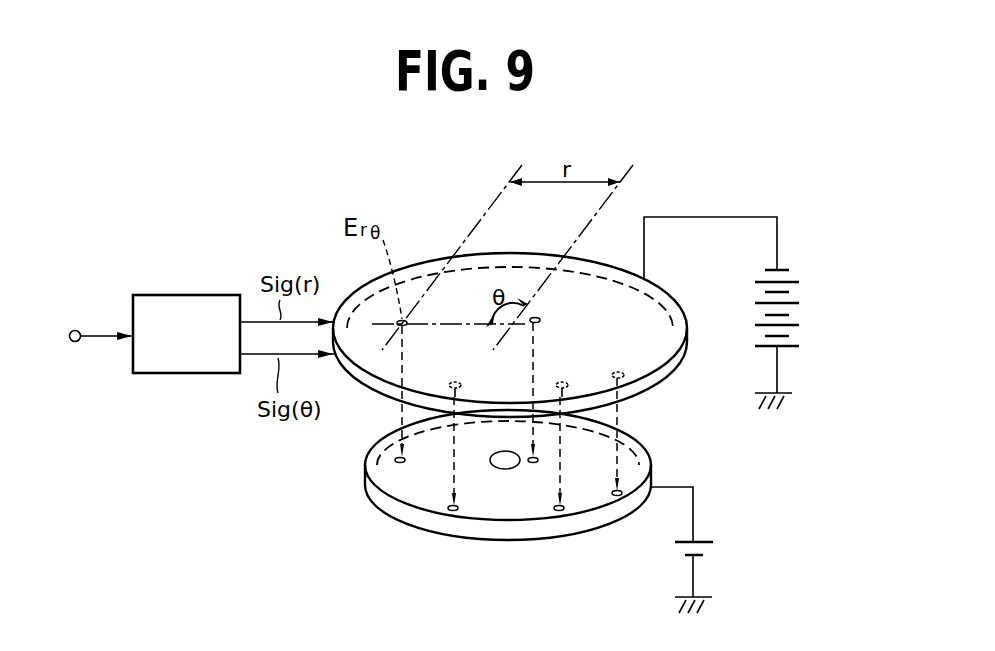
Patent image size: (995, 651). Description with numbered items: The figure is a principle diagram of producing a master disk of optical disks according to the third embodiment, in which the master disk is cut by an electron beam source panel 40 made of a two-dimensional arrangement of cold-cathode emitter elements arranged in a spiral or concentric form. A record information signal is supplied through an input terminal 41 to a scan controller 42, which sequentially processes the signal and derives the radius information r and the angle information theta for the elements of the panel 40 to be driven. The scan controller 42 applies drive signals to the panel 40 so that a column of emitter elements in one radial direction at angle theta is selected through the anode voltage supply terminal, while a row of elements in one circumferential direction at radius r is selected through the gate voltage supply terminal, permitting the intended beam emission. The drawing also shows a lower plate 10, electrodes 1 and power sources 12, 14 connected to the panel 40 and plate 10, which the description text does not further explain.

The electron beam source panel 40 is at (667, 290).
The lower plate / insulating substrate 10 is at (650, 448).
The electrodes 1 is at (627, 374).
The high voltage DC power source 12 is at (795, 313).
The bias power source 14 is at (717, 552).
The input terminal 41 is at (73, 330).
The scan controller 42 is at (202, 295).